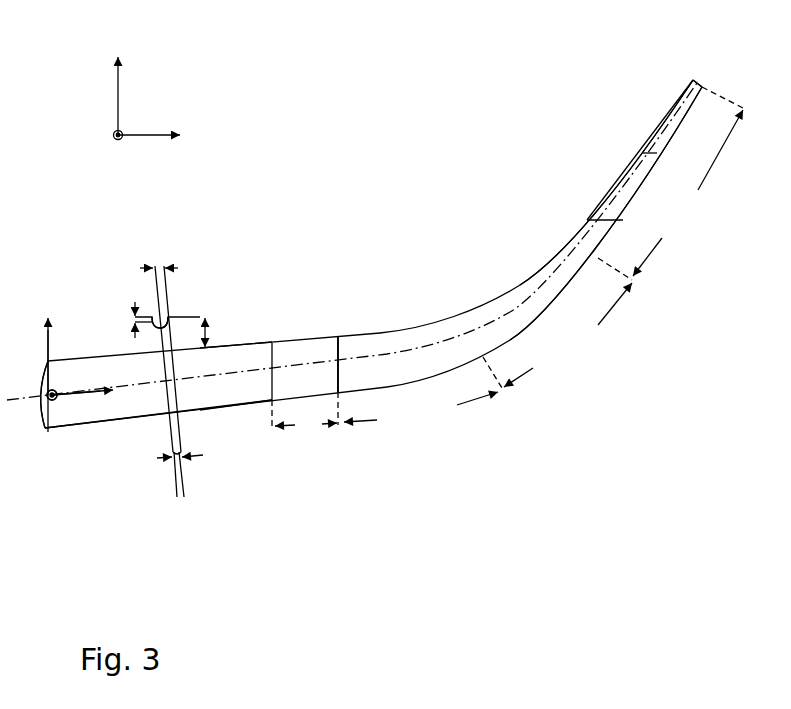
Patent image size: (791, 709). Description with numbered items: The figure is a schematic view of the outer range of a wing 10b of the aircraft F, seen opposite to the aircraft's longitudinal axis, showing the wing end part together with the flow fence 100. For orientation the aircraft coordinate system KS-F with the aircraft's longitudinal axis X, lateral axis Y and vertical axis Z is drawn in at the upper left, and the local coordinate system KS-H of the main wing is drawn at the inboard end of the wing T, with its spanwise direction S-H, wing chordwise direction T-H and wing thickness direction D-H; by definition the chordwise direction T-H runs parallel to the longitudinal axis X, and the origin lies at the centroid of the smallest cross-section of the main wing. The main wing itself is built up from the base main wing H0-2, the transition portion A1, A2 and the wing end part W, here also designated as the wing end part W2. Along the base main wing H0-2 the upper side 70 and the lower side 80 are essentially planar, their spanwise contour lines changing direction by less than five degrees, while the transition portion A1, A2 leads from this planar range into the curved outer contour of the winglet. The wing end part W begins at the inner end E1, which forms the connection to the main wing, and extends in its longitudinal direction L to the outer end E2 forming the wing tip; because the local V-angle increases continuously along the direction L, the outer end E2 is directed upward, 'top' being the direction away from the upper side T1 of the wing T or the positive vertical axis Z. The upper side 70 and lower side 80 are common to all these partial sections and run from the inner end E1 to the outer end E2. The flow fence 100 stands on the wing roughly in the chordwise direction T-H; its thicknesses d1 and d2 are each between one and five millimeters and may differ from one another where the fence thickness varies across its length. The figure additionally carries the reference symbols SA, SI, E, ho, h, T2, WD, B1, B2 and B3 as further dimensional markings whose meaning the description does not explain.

The wing 10b is at (165, 518).
The flow fence 100 is at (167, 403).
The upper side 70 is at (548, 250).
The lower side 80 is at (545, 310).
The aircraft coordinate system KS-F is at (88, 100).
The local coordinate system of the main wing KS-H is at (60, 313).
The aircraft's longitudinal axis X is at (83, 146).
The aircraft's lateral axis Y is at (163, 122).
The aircraft's vertical axis Z is at (103, 66).
The wing thickness direction D-H is at (50, 337).
The spanwise direction S-H is at (79, 393).
The wing chordwise direction T-H is at (57, 398).
The base main wing H0-2 is at (60, 418).
The thickness of the flow fence d1 is at (175, 470).
The thickness of the flow fence d2 is at (167, 260).
The seat / abutment surface SA is at (175, 318).
The inner surface SI is at (152, 315).
The recess / slot E is at (168, 317).
The aircraft F is at (163, 335).
The offset height ho is at (120, 320).
The height of seat above handle h is at (213, 332).
The wing T is at (228, 405).
The upper side of the wing T1 is at (248, 405).
The second thickness T2 is at (242, 343).
The transition portion A1 is at (272, 343).
The transition portion A2 is at (293, 338).
The width of transition WD is at (305, 335).
The inner end E1 is at (344, 376).
The outer end E2 is at (700, 75).
The first blade width B1 is at (438, 394).
The second blade width B2 is at (597, 309).
The third blade width B3 is at (688, 181).
The longitudinal direction of the wing end part L is at (612, 203).
The wing end part W is at (585, 127).
The left wing end part W2 is at (645, 152).